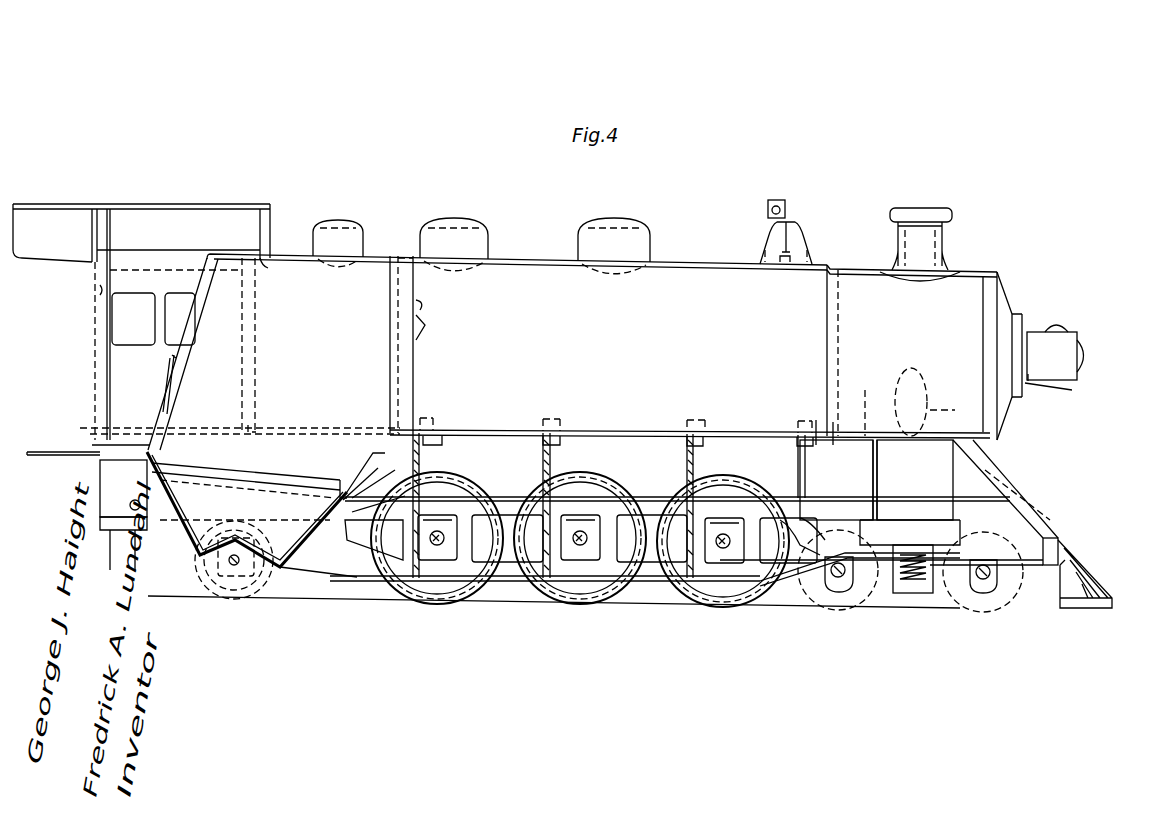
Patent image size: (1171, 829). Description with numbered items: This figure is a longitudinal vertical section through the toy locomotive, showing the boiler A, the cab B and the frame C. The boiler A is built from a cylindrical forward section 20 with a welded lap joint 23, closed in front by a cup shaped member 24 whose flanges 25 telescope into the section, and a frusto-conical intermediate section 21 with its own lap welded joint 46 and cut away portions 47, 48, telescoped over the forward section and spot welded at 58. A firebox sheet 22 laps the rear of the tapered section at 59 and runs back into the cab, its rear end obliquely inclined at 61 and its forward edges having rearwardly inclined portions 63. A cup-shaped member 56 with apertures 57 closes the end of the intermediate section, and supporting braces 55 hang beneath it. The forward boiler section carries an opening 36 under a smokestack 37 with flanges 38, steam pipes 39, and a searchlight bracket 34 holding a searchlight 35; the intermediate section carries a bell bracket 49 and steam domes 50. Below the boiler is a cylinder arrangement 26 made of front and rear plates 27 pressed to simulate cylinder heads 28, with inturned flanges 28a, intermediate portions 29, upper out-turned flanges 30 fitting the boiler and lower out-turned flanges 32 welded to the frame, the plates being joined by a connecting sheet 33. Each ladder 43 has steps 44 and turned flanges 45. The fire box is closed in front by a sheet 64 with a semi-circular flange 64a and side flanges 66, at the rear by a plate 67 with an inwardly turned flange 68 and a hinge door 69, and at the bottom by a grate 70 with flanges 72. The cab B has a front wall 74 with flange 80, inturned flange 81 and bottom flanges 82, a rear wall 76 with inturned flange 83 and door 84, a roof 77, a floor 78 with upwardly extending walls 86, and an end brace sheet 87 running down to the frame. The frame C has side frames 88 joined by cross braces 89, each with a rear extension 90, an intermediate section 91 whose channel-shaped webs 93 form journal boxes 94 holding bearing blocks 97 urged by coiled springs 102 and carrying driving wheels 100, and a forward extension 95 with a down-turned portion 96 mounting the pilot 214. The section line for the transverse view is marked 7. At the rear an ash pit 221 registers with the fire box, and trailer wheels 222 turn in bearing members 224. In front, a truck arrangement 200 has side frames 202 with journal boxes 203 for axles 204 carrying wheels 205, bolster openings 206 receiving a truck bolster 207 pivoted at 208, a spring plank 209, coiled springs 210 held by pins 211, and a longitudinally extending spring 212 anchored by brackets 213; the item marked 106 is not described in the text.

The cab B is at (190, 215).
The boiler A is at (668, 282).
The frame C is at (368, 575).
The roof 77 is at (150, 204).
The inturned flange 81 is at (262, 212).
The flange 80 is at (262, 255).
The inturned flange 83 is at (112, 218).
The rear wall 76 is at (88, 258).
The door 84 is at (98, 292).
The front wall 74 is at (258, 323).
The obliquely inclined rear end 61 is at (204, 330).
The plate 67 is at (169, 362).
The inwardly turned flange 68 is at (192, 372).
The hinge door 69 is at (168, 384).
The inturned flanges 82 is at (258, 422).
The intermediate section 21 is at (528, 266).
The firebox sheet 22 is at (392, 257).
The lap joint 59 is at (360, 245).
The steam domes 50 is at (468, 228).
The cup-shaped member 56 is at (418, 296).
The apertures 57 is at (420, 340).
The cut away portion 48 is at (425, 420).
The spot weld 58 is at (840, 334).
The lap welded joint 46 is at (815, 272).
The bell bracket 49 is at (788, 206).
The smokestack 37 is at (892, 208).
The flanges 38 is at (900, 264).
The opening 36 is at (927, 282).
The forward section 20 is at (965, 282).
The flanges 25 is at (1003, 284).
The cup shaped member 24 is at (1010, 304).
The searchlight 35 is at (1072, 336).
The searchlight bracket 34 is at (1045, 384).
The welded lap joint 23 is at (916, 410).
The cut away portion 47 is at (845, 430).
The intermediate portions 29 is at (880, 436).
The out-turned flange 30 is at (860, 437).
The steam pipes 39 is at (953, 408).
The cross braces 89 is at (420, 572).
The side frames 88 is at (508, 574).
The journal boxes 94 is at (440, 567).
The bearing block 97 is at (437, 548).
The driving wheels 100 is at (470, 567).
The channel-shaped webs 93 is at (470, 530).
The coiled spring 102 is at (440, 522).
The intermediate section 91 is at (588, 520).
The supporting braces 55 is at (425, 464).
The sheet 64 is at (386, 456).
The turned semi-circular flange 64a is at (349, 471).
The rearwardly inclined portions 63 is at (370, 476).
The side flanges 66 is at (390, 487).
The section line 7 is at (575, 640).
The rear extension 90 is at (178, 527).
The grate 70 is at (268, 478).
The flanges 72 is at (195, 466).
The bearing members 224 is at (228, 577).
The ash pit 221 is at (210, 547).
The trailer wheels 222 is at (258, 564).
The upwardly extending walls 86 is at (121, 501).
The floor 78 is at (128, 491).
The end brace sheet 87 is at (100, 467).
The frame brace 106 is at (479, 581).
The cylinder arrangement 26 is at (860, 450).
The cylinder heads 28 is at (860, 470).
The front and rear plates 27 is at (860, 487).
The connecting sheet 33 is at (912, 488).
The pivotal connection 208 is at (926, 467).
The forward extension 95 is at (905, 530).
The inturned flanges 28a is at (910, 532).
The brackets 213 is at (782, 527).
The longitudinally extending spring 212 is at (811, 519).
The wheels 205 is at (1031, 592).
The out-turned flange 32 is at (911, 575).
The journal boxes 203 is at (838, 580).
The axles 204 is at (825, 592).
The truck arrangement 200 is at (905, 597).
The bolster opening 206 is at (890, 592).
The truck bolster 207 is at (910, 597).
The spring plank 209 is at (925, 600).
The coiled springs 210 is at (895, 587).
The side frames 202 is at (935, 597).
The pin 211 is at (951, 612).
The down-turned portion 96 is at (988, 602).
The pilot 214 is at (1098, 598).
The turned flanges 45 is at (1030, 502).
The steps 44 is at (1020, 492).
The ladder 43 is at (1030, 522).